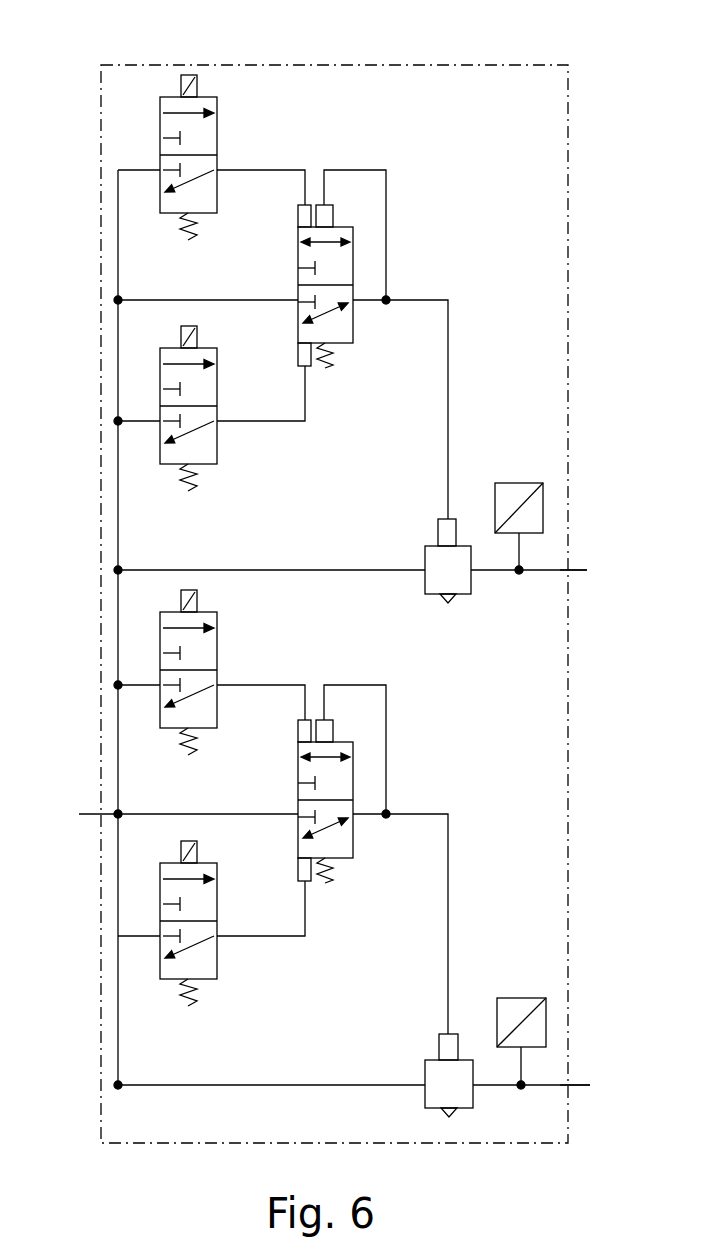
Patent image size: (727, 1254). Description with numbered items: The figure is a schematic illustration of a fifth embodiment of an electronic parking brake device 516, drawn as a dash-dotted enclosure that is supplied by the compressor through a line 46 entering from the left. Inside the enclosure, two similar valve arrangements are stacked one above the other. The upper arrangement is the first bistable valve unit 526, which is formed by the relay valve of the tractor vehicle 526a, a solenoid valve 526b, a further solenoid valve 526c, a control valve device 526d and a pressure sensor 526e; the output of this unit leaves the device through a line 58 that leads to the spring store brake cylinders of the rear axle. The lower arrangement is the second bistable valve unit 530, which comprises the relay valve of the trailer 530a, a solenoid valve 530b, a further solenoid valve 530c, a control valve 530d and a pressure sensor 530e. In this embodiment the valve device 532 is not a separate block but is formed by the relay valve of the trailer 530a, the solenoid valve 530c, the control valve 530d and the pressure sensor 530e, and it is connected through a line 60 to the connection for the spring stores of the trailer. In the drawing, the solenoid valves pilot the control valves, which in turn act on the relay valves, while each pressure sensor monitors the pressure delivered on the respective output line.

The electronic parking brake device 516 is at (625, 109).
The first bistable valve unit 526 is at (625, 214).
The second bistable valve unit 530 is at (625, 321).
The valve device 532 is at (625, 426).
The relay valve of the tractor vehicle 526a is at (430, 546).
The solenoid valve 526b is at (217, 118).
The further solenoid valve 526c is at (217, 440).
The control valve device 526d is at (298, 261).
The pressure sensor 526e is at (523, 483).
The relay valve of the trailer 530a is at (430, 1060).
The solenoid valve 530b is at (217, 638).
The further solenoid valve 530c is at (217, 955).
The control valve 530d is at (298, 770).
The pressure sensor 530e is at (525, 998).
The line 46 is at (90, 812).
The line 58 is at (577, 568).
The line 60 is at (577, 1083).